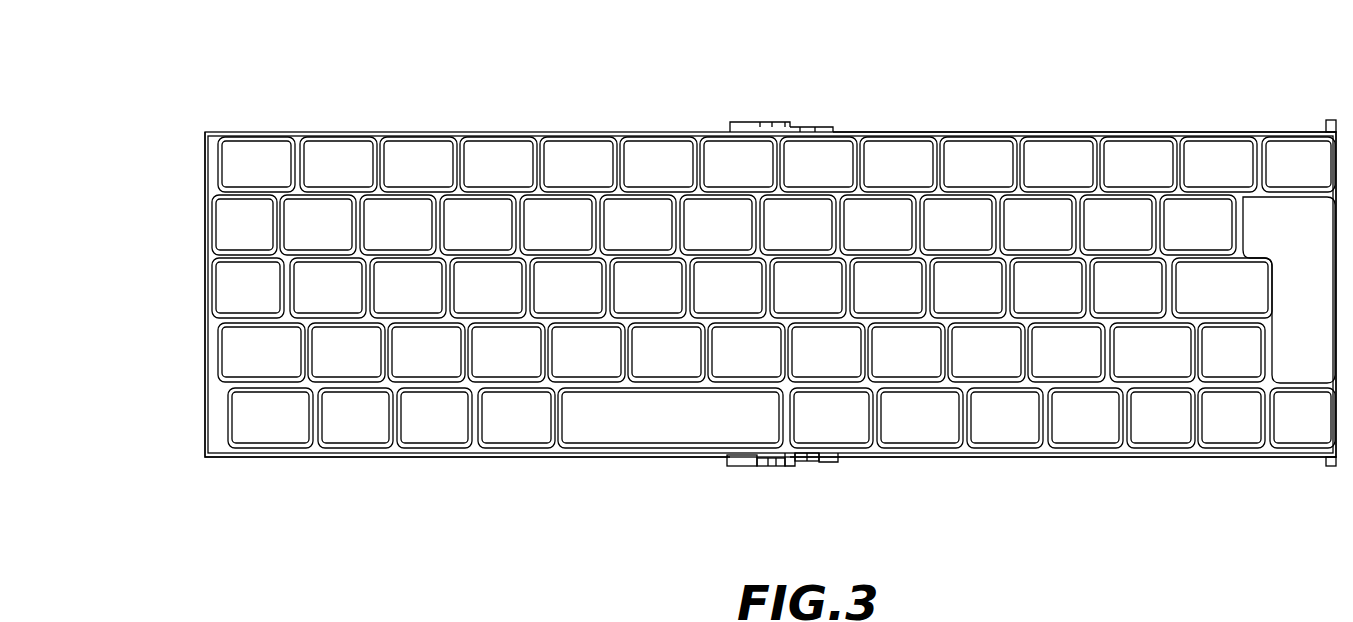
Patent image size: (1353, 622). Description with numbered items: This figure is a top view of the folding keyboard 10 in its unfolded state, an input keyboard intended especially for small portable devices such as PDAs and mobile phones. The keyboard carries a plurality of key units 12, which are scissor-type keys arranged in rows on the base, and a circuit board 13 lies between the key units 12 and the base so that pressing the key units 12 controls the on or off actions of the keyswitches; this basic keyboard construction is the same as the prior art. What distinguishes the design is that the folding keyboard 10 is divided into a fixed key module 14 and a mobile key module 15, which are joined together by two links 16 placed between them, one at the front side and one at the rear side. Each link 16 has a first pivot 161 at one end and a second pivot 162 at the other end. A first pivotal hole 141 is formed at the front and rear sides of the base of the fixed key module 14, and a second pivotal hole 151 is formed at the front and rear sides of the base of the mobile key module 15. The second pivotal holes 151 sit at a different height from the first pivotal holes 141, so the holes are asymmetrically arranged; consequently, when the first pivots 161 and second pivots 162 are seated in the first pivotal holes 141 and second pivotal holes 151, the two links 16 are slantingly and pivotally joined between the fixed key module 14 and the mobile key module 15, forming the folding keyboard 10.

The folding keyboard 10 is at (358, 122).
The key unit 12 is at (484, 148).
The circuit board 13 is at (212, 434).
The fixed key module 14 is at (226, 463).
The mobile key module 15 is at (1222, 462).
The link 16 is at (792, 466).
The first pivotal hole 141 is at (727, 467).
The second pivotal hole 151 is at (838, 460).
The first pivot 161 is at (770, 468).
The second pivot 162 is at (815, 467).